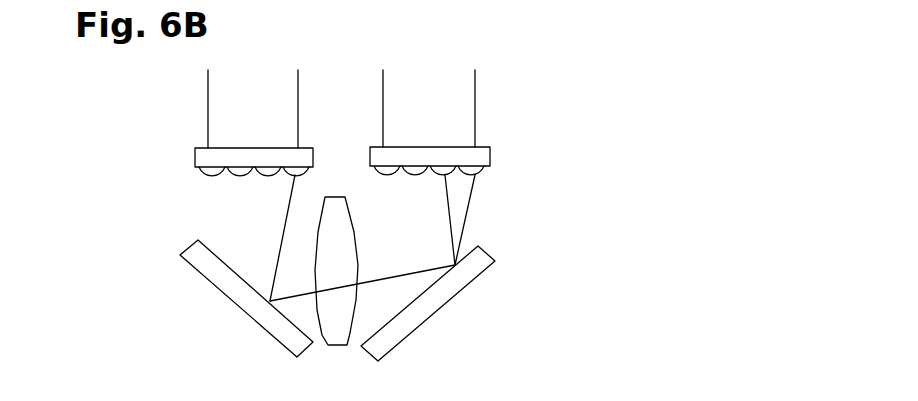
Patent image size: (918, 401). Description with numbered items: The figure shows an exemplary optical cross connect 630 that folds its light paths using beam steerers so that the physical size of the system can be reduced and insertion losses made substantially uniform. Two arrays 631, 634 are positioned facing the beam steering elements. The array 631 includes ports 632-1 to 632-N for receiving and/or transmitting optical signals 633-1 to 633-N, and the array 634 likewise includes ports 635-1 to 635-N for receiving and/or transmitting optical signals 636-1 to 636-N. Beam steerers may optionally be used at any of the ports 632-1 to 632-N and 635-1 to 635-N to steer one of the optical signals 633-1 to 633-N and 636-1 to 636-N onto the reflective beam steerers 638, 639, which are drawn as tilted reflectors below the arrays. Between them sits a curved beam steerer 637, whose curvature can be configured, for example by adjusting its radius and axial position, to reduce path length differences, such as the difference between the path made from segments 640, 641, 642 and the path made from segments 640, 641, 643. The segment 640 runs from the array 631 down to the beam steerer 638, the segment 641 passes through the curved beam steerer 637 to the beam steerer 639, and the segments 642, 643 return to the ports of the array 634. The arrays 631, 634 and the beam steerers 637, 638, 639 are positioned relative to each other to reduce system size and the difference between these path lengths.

The cross connect 630 is at (648, 163).
The array 631 is at (186, 153).
The port 632-1 is at (200, 171).
The port 632-N is at (289, 175).
The optical signal 633-1 is at (207, 86).
The optical signal 633-N is at (297, 88).
The array 634 is at (499, 153).
The port 635-1 is at (378, 174).
The port 635-N is at (484, 170).
The optical signal 636-1 is at (384, 84).
The optical signal 636-N is at (476, 100).
The beam steerer 637 is at (333, 196).
The beam steerer 638 is at (213, 285).
The beam steerer 639 is at (458, 293).
The segment 640 is at (283, 243).
The segment 641 is at (430, 268).
The segment 642 is at (448, 238).
The segment 643 is at (470, 205).